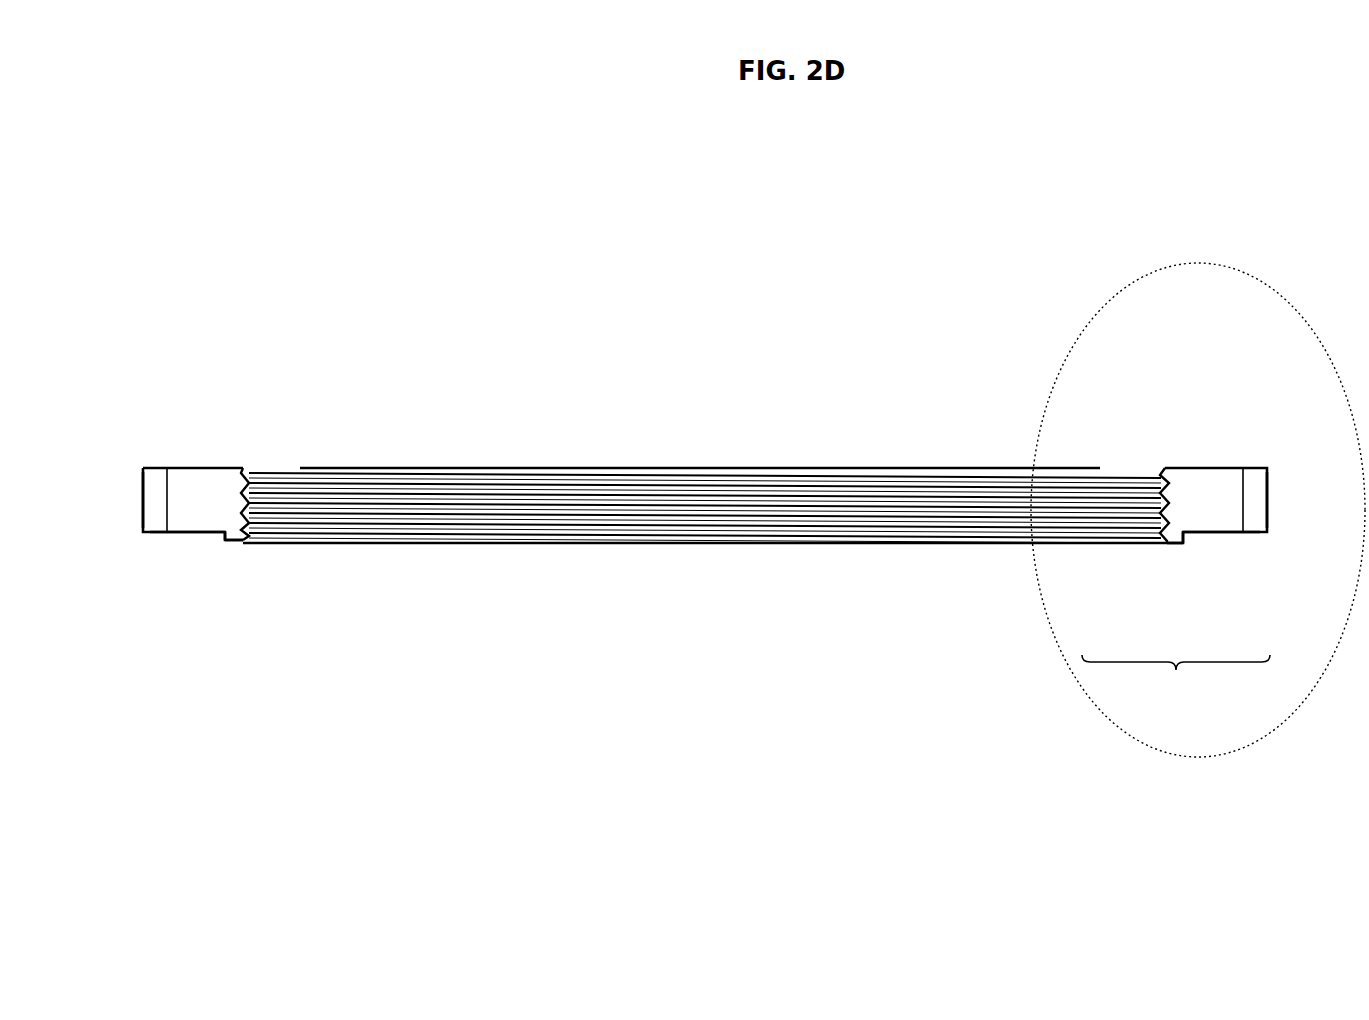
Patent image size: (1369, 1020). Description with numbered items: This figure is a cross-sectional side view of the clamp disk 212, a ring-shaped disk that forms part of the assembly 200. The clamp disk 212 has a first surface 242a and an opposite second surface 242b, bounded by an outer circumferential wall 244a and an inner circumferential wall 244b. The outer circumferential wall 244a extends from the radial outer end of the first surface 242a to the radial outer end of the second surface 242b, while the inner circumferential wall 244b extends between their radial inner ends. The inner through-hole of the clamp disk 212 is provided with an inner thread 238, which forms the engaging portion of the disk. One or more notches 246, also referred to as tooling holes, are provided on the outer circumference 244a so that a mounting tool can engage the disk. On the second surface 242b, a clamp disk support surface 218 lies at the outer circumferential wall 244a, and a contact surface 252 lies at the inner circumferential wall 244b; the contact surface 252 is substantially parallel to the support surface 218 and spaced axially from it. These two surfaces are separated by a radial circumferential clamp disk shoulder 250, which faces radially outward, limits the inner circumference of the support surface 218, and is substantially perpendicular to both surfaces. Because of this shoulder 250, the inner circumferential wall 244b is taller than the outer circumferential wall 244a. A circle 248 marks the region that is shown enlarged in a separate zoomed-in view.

The fastener assembly 200 is at (1320, 181).
The clamp disk 212 is at (402, 448).
The clamp disk support surface 218 is at (177, 534).
The inner thread 238 is at (810, 480).
The first surface 242a is at (683, 468).
The second surface 242b is at (1176, 694).
The outer circumferential wall 244a is at (143, 477).
The inner circumferential wall 244b is at (245, 523).
The notch 246 is at (158, 490).
The circle 248 is at (1240, 747).
The radial circumferential clamp disk shoulder 250 is at (218, 522).
The contact surface 252 is at (242, 543).